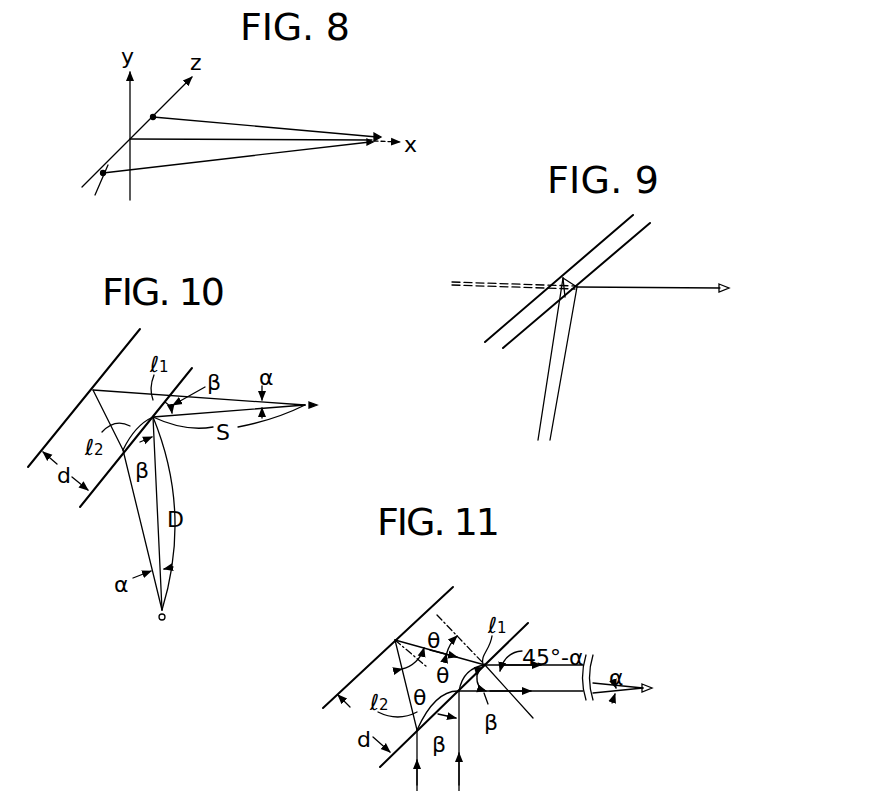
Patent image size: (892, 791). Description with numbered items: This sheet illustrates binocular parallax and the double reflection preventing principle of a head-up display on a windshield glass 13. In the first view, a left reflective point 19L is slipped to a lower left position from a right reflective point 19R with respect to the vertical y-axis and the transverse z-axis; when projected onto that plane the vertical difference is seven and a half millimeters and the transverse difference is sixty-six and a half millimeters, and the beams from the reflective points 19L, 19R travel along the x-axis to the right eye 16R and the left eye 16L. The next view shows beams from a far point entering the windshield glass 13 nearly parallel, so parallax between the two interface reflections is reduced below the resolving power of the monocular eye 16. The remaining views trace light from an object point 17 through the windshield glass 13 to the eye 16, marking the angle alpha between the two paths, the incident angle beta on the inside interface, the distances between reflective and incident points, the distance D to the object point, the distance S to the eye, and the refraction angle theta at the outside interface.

In FIG. 9, the windshield glass 13 is at (587, 265).
In FIG. 10, the windshield glass 13 is at (115, 376).
In FIG. 11, the windshield glass 13 is at (447, 610).
In FIG. 9, the eye 16 is at (713, 293).
In FIG. 10, the eye 16 is at (318, 401).
In FIG. 11, the eye 16 is at (643, 680).
In FIG. 8, the right eye 16R is at (377, 137).
In FIG. 8, the left eye 16L is at (370, 143).
In FIG. 10, the object point 17 is at (158, 621).
In FIG. 8, the right reflective point 19R is at (153, 117).
In FIG. 8, the left reflective point 19L is at (103, 173).